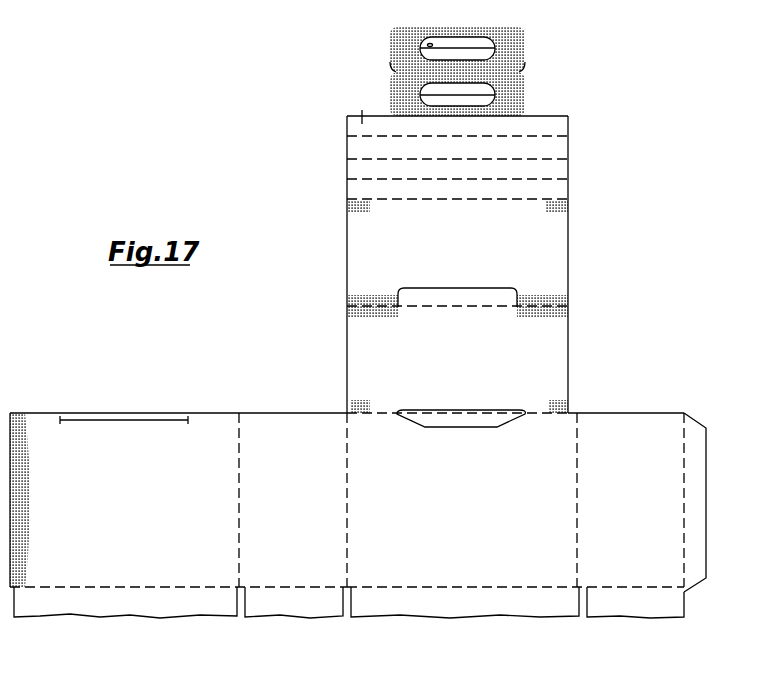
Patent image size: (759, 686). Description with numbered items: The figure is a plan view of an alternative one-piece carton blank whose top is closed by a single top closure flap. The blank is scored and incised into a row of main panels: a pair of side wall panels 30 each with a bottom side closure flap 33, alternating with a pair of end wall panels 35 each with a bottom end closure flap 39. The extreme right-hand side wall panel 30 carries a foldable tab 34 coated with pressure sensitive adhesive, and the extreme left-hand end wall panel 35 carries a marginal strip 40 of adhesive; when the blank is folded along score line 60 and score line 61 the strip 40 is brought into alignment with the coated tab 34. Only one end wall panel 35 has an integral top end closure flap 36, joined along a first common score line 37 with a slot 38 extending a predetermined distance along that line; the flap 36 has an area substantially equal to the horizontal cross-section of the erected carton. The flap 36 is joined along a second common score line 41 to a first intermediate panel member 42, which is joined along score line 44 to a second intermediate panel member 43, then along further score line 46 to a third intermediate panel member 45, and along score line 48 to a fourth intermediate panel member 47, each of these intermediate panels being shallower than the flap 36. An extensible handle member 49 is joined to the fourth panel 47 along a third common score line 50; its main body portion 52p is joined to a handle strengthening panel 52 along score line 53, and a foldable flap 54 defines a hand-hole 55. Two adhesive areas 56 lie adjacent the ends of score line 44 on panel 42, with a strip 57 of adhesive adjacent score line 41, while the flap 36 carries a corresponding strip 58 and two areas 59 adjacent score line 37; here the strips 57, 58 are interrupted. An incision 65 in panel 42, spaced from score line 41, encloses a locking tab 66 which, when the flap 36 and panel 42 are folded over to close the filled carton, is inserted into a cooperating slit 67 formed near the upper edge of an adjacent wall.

The side wall panel 30 is at (300, 496).
The bottom side closure flap 33 is at (302, 590).
The foldable tab 34 is at (704, 440).
The end wall panel 35 is at (137, 496).
The top end closure flap 36 is at (565, 343).
The first common score line 37 is at (540, 414).
The slot 38 is at (452, 428).
The bottom end closure flap 39 is at (101, 580).
The marginal strip of pressure sensitive adhesive 40 is at (28, 457).
The second common score line 41 is at (473, 308).
The first intermediate panel member 42 is at (566, 243).
The second intermediate panel member 43 is at (565, 192).
The score line 44 is at (458, 192).
The third intermediate panel member 45 is at (565, 171).
The further score line 46 is at (458, 172).
The fourth intermediate panel member 47 is at (565, 151).
The score line 48 is at (458, 151).
The extensible handle member 49 is at (578, 113).
The third common score line 50 is at (450, 137).
The handle strengthening panel 52 is at (521, 51).
The main body portion 52p is at (356, 105).
The score line 53 is at (505, 70).
The foldable flap 54 is at (396, 54).
The hand-hole 55 is at (428, 45).
The areas of pressure sensitive adhesive 56 is at (369, 208).
The strip of pressure sensitive adhesive 57 is at (524, 304).
The strip of pressure sensitive adhesive 58 is at (538, 319).
The areas of pressure sensitive adhesive 59 is at (364, 400).
The score line 60 is at (577, 433).
The score line 61 is at (239, 433).
The incision 65 is at (432, 280).
The locking tab 66 is at (476, 280).
The slit 67 is at (162, 404).